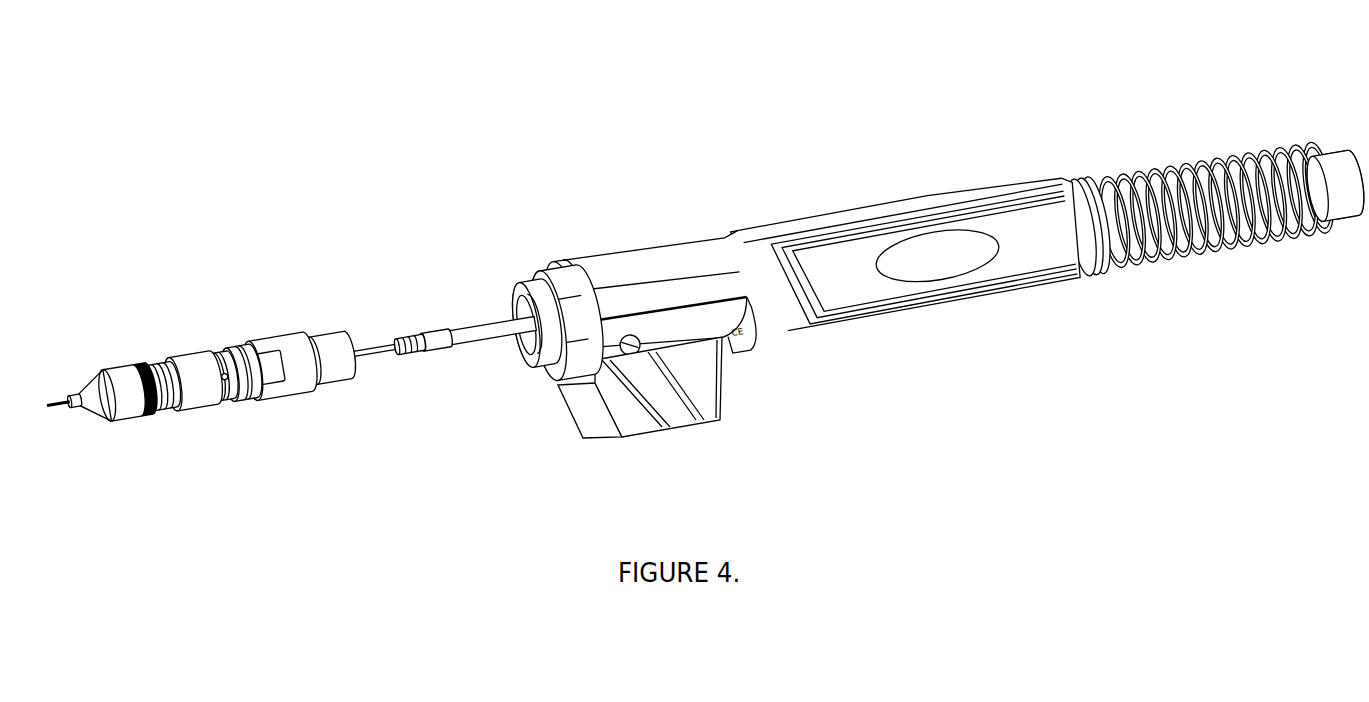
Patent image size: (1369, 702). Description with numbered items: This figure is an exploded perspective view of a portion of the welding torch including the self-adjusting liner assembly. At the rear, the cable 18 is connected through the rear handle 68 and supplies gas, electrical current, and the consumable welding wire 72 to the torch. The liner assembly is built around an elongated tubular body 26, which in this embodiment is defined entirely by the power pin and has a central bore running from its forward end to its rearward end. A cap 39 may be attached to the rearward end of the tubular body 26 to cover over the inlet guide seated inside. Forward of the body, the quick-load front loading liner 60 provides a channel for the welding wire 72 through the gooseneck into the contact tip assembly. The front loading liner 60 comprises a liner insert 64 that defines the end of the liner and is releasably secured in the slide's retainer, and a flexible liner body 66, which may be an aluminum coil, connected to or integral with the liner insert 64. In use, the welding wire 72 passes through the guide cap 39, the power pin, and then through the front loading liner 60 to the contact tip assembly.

The cable 18 is at (1215, 159).
The elongated tubular body 26 is at (248, 296).
The cap 39 is at (127, 317).
The front loading liner 60 is at (441, 238).
The liner insert 64 is at (406, 264).
The flexible liner body 66 is at (553, 272).
The rear handle 68 is at (907, 207).
The welding wire 72 is at (94, 284).